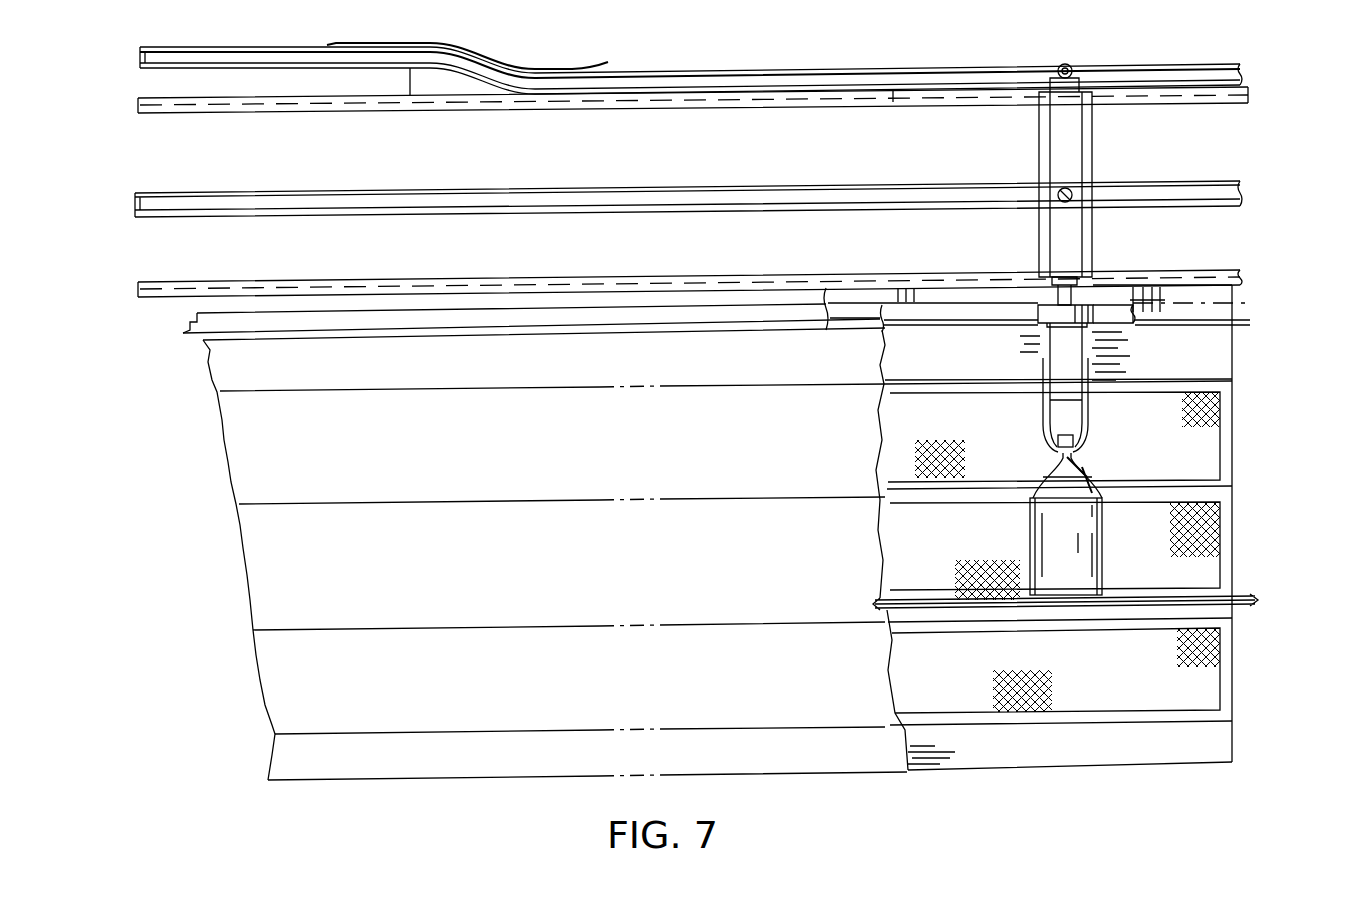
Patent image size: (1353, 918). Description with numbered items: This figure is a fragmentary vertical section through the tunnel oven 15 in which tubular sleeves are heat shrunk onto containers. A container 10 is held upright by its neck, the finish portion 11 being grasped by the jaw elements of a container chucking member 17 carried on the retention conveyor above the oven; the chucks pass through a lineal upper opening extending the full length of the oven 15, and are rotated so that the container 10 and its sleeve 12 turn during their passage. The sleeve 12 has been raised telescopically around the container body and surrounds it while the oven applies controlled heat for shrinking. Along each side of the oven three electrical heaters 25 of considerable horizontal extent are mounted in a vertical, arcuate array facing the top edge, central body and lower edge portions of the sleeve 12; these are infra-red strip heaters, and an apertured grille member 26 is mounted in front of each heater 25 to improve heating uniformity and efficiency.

The container 10 is at (1093, 478).
The finish portion 11 is at (1058, 441).
The sleeve 12 is at (1102, 556).
The tunnel oven 15 is at (1238, 422).
The container chucking member 17 is at (1092, 410).
The electrical heater 25 is at (1236, 655).
The apertured grille member 26 is at (923, 448).